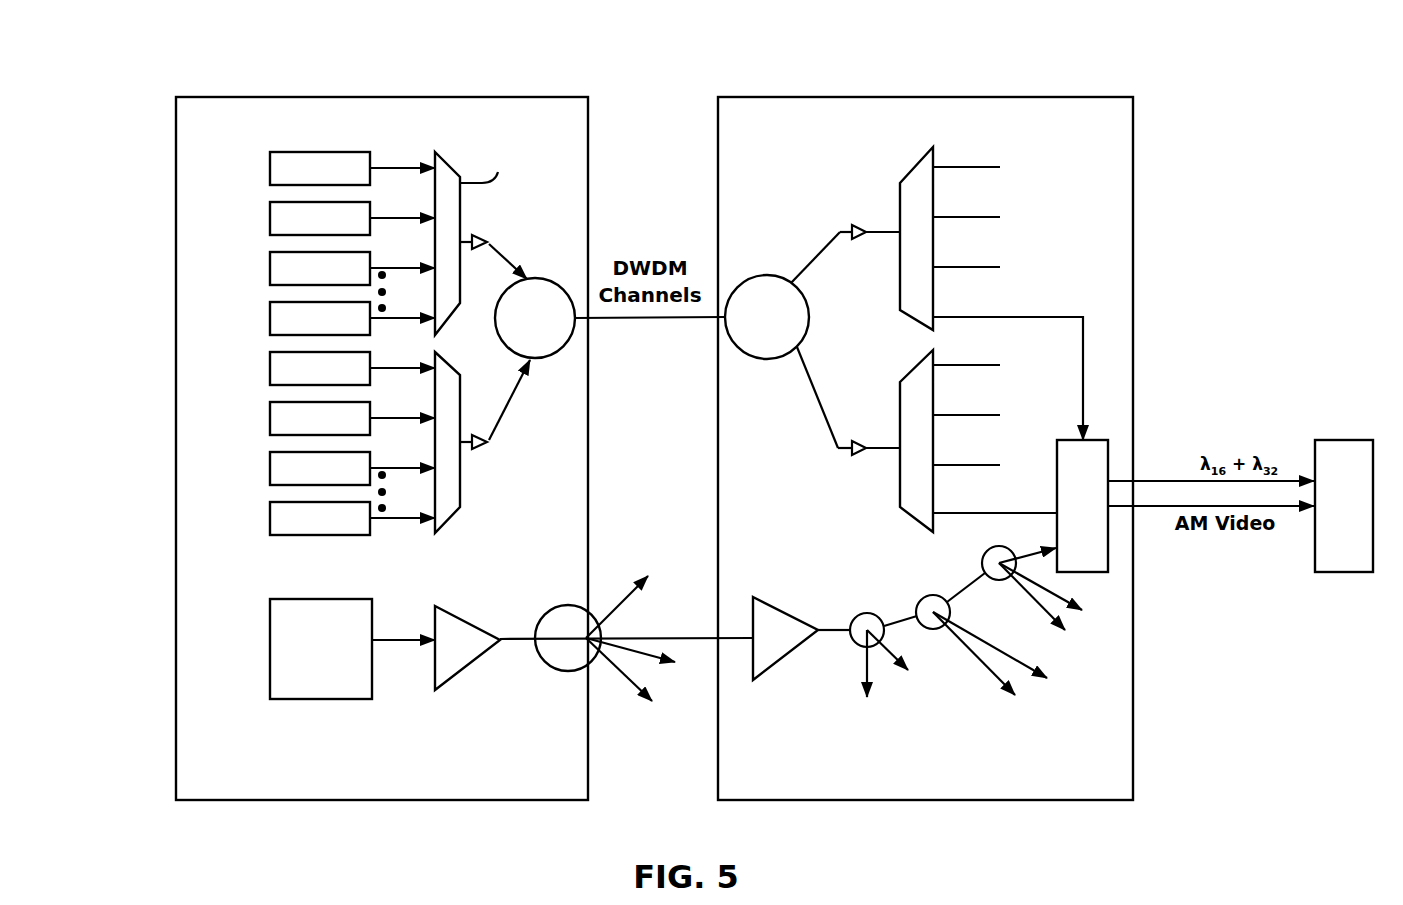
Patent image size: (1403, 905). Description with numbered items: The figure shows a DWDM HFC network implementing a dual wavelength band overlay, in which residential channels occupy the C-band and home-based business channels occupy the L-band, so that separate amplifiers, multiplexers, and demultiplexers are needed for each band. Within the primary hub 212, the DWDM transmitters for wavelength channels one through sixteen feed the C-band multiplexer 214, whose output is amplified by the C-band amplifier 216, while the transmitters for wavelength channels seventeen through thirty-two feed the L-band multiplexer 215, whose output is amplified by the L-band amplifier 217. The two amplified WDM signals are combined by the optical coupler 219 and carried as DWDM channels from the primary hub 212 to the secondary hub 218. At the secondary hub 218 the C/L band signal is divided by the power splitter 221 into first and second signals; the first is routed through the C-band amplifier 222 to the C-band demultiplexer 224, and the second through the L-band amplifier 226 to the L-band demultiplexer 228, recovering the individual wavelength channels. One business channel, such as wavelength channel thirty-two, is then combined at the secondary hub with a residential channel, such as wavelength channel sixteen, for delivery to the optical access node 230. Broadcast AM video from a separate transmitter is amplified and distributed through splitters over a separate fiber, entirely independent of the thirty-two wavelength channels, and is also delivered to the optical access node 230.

The primary hub 212 is at (550, 783).
The C-band multiplexer 214 is at (477, 242).
The L-band multiplexer 215 is at (460, 507).
The C-band amplifier 216 is at (490, 239).
The L-band amplifier 217 is at (487, 446).
The optical coupler 219 is at (514, 331).
The secondary hub 218 is at (993, 780).
The power splitter 221 is at (745, 330).
The C-band amplifier 222 is at (858, 226).
The C-band demultiplexer 224 is at (928, 318).
The L-band amplifier 226 is at (862, 455).
The L-band demultiplexer 228 is at (927, 532).
The optical access node 230 is at (1361, 519).